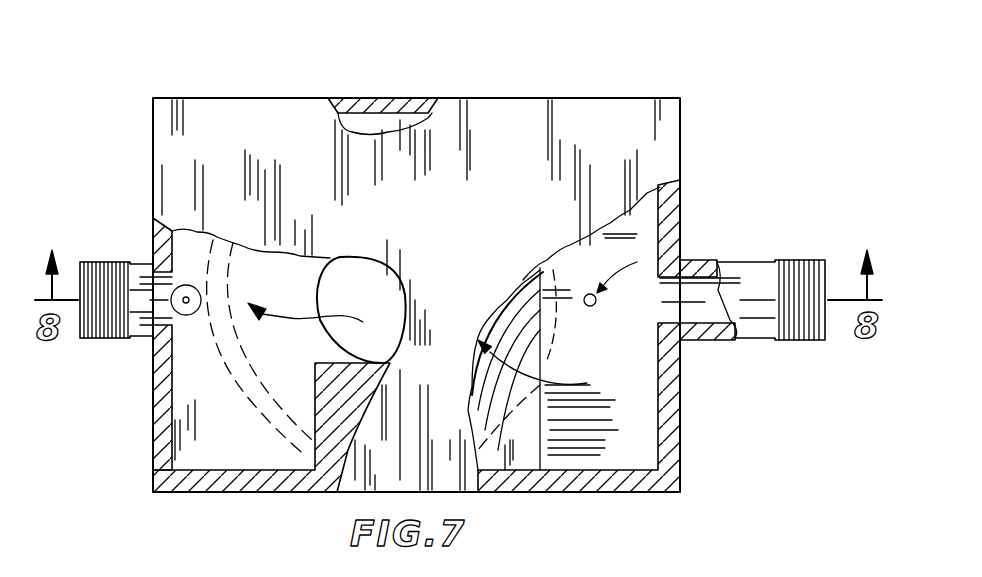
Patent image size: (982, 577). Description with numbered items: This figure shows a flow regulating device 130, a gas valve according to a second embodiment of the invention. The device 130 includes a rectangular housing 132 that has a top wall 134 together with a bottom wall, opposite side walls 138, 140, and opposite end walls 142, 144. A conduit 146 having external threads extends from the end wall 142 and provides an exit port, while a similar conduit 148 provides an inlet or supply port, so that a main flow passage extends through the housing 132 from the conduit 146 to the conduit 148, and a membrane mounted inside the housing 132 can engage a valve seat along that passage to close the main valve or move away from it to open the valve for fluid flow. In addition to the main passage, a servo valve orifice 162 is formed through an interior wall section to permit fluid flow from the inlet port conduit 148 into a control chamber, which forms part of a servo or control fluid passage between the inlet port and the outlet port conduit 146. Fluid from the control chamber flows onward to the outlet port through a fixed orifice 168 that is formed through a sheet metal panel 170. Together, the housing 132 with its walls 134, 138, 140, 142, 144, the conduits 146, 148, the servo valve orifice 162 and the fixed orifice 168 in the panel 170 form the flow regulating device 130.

The flow regulating device 130 is at (452, 297).
The rectangular housing 132 is at (655, 166).
The top wall 134 is at (488, 229).
The side wall 138 is at (372, 104).
The side wall 140 is at (242, 484).
The end wall 142 is at (160, 433).
The end wall 144 is at (668, 428).
The conduit 146 is at (100, 262).
The conduit 148 is at (742, 282).
The servo valve orifice 162 is at (590, 307).
The fixed orifice 168 is at (190, 286).
The sheet metal panel 170 is at (187, 316).